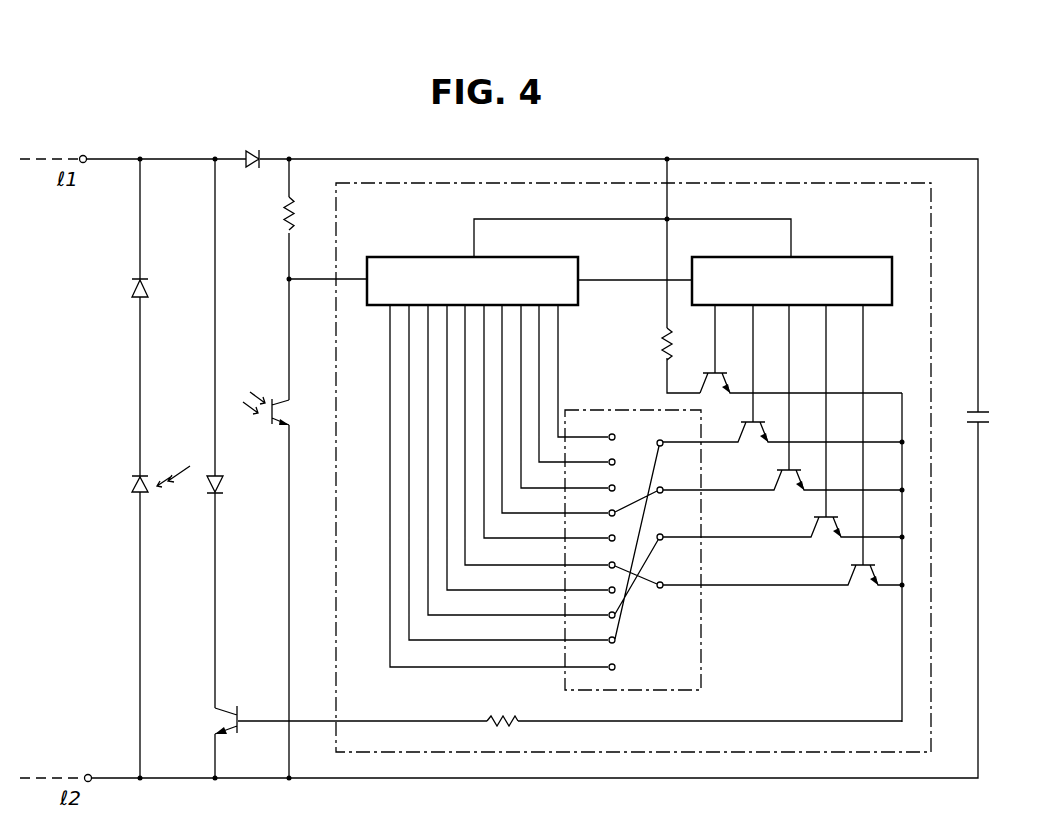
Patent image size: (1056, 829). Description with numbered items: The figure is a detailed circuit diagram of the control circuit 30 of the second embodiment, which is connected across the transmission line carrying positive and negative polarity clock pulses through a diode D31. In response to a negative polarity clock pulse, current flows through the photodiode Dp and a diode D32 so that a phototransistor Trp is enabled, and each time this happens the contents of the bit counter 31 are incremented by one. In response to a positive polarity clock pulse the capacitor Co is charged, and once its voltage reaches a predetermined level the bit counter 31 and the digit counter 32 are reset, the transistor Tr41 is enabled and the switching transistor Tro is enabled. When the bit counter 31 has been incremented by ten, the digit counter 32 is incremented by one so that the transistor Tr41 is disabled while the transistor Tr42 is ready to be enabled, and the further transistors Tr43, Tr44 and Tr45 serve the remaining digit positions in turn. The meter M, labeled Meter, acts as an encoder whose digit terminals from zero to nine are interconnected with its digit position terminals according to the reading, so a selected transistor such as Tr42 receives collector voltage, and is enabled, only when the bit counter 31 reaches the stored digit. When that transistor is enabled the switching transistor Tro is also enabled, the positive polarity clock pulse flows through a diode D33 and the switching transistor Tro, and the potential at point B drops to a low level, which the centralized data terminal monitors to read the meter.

The control circuit 30 is at (736, 188).
The bit counter 31 is at (419, 257).
The digit counter 32 is at (855, 257).
The diode D31 is at (256, 152).
The diode D32 is at (132, 290).
The diode D33 is at (224, 482).
The photodiode Dp is at (132, 484).
The phototransistor Trp is at (272, 400).
The switching transistor Tro is at (236, 720).
The transistor Tr41 is at (716, 380).
The transistor Tr42 is at (751, 443).
The transistor Tr43 is at (788, 491).
The transistor Tr44 is at (825, 538).
The transistor Tr45 is at (863, 587).
The capacitor Co is at (993, 418).
The meter Meter is at (703, 677).